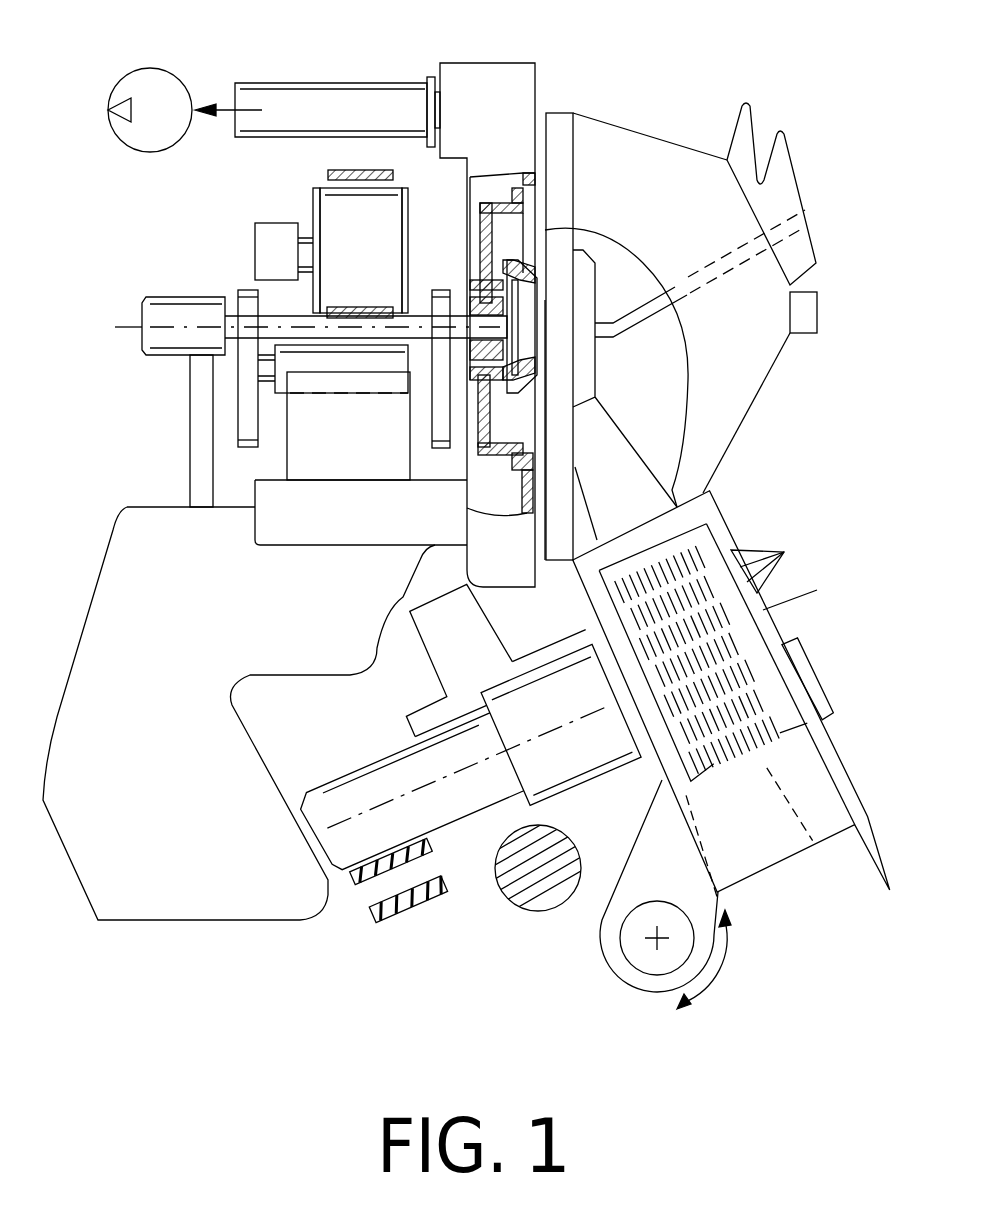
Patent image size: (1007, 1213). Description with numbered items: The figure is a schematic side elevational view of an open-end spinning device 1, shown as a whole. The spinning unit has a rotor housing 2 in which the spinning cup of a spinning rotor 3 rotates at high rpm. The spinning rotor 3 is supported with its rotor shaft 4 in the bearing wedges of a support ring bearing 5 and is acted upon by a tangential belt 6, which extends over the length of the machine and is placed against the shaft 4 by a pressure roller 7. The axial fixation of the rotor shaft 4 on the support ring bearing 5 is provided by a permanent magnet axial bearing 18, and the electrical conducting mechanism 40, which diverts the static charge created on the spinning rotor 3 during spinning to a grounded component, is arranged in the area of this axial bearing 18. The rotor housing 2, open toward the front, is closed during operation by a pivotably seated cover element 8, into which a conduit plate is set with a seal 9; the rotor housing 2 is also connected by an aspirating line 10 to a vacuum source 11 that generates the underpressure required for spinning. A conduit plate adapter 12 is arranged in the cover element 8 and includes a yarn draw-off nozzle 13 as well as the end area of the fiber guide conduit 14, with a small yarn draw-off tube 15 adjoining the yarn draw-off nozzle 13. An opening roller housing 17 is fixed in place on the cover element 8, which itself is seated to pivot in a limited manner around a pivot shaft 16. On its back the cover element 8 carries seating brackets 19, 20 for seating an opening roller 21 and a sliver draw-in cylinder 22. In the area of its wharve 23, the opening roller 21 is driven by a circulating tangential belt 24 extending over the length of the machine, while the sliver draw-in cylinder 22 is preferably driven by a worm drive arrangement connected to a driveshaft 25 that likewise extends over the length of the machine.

The open-end spinning device 1 is at (660, 82).
The rotor housing 2 is at (490, 243).
The spinning rotor 3 is at (545, 308).
The rotor shaft 4 is at (415, 325).
The support ring bearing 5 is at (240, 472).
The tangential belt 6 is at (344, 312).
The pressure roller 7 is at (350, 236).
The cover element 8 is at (557, 140).
The seal 9 is at (540, 417).
The aspirating line 10 is at (347, 98).
The vacuum source 11 is at (152, 98).
The conduit plate adapter 12 is at (530, 300).
The yarn draw-off nozzle 13 is at (517, 333).
The fiber guide conduit 14 is at (623, 447).
The small yarn draw-off tube 15 is at (690, 300).
The pivot shaft 16 is at (657, 938).
The opening roller housing 17 is at (838, 748).
The permanent magnet axial bearing 18 is at (188, 318).
The seating bracket 19 is at (555, 708).
The seating bracket 20 is at (530, 660).
The opening roller 21 is at (670, 573).
The sliver draw-in cylinder 22 is at (752, 552).
The wharve 23 is at (357, 790).
The circulating tangential belt 24 is at (352, 880).
The driveshaft 25 is at (517, 875).
The electrical conducting mechanism 40 is at (155, 370).